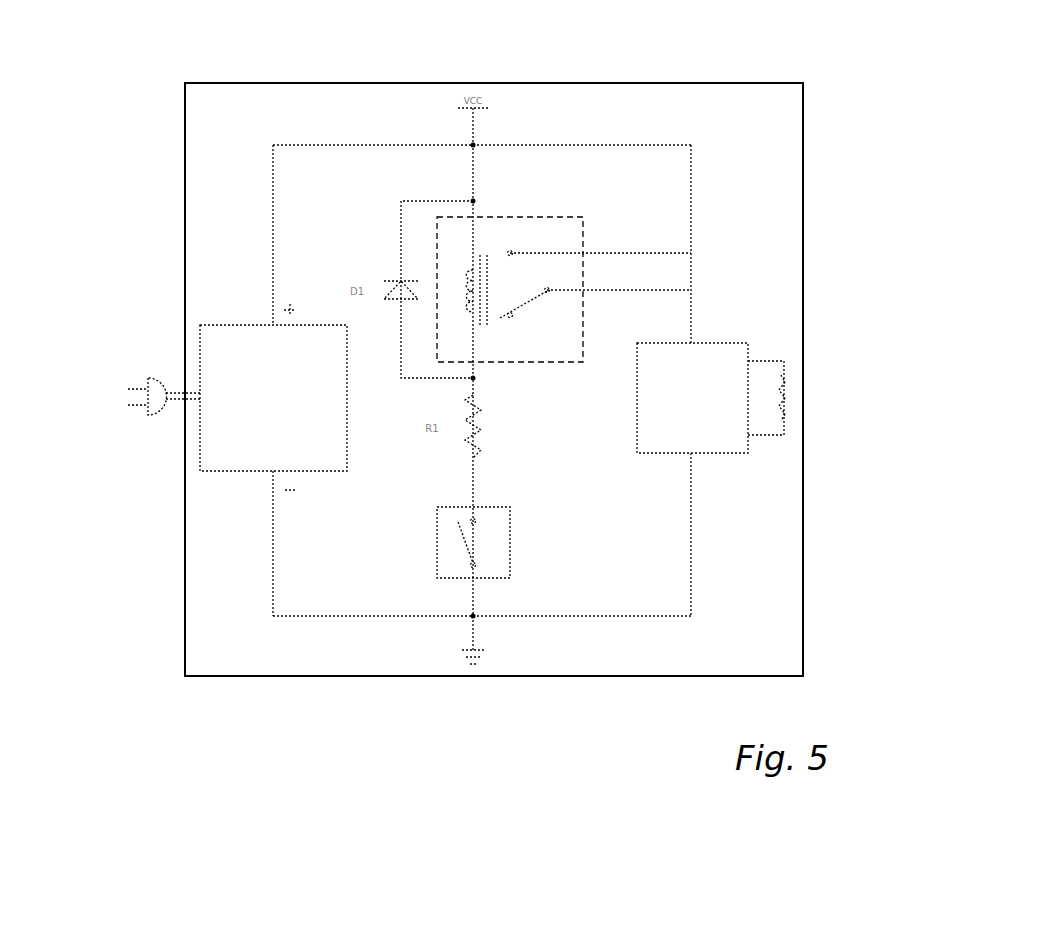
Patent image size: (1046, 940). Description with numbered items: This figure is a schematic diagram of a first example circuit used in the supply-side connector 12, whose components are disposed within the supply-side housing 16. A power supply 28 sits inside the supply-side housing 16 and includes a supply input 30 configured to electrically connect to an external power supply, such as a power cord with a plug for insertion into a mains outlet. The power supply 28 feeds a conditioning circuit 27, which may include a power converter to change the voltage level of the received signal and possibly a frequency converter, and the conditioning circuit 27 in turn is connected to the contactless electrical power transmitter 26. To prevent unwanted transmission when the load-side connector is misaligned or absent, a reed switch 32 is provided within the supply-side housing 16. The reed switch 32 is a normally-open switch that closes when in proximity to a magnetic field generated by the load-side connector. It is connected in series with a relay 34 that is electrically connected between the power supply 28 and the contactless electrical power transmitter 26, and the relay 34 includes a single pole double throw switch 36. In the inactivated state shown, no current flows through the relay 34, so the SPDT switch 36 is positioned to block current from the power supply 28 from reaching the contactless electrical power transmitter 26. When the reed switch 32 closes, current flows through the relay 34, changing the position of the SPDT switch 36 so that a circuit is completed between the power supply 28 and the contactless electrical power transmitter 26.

The supply-side connector 12 is at (118, 545).
The supply-side housing 16 is at (694, 83).
The contactless electrical power transmitter 26 is at (768, 361).
The conditioning circuit 27 is at (712, 343).
The power supply 28 is at (258, 322).
The supply input 30 is at (200, 393).
The reed switch 32 is at (487, 503).
The relay 34 is at (495, 217).
The single pole double throw (SPDT) switch 36 is at (540, 293).